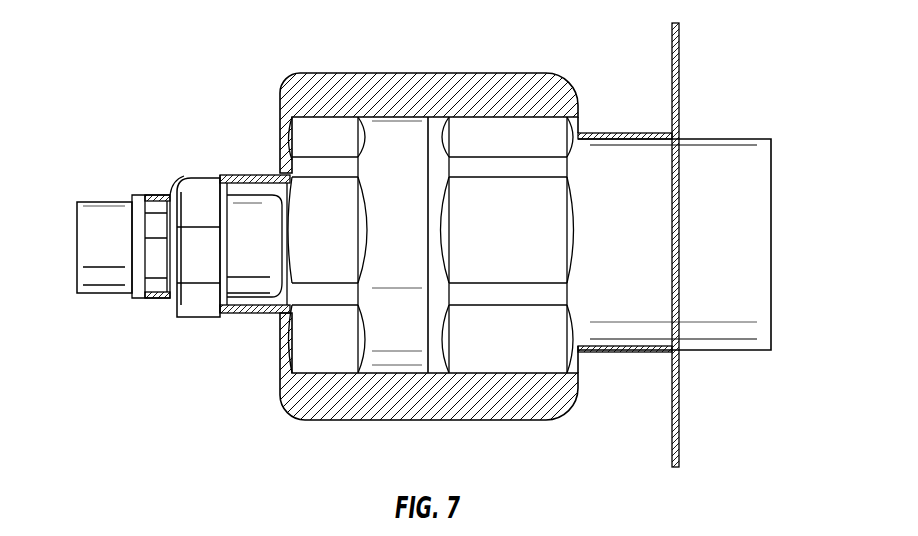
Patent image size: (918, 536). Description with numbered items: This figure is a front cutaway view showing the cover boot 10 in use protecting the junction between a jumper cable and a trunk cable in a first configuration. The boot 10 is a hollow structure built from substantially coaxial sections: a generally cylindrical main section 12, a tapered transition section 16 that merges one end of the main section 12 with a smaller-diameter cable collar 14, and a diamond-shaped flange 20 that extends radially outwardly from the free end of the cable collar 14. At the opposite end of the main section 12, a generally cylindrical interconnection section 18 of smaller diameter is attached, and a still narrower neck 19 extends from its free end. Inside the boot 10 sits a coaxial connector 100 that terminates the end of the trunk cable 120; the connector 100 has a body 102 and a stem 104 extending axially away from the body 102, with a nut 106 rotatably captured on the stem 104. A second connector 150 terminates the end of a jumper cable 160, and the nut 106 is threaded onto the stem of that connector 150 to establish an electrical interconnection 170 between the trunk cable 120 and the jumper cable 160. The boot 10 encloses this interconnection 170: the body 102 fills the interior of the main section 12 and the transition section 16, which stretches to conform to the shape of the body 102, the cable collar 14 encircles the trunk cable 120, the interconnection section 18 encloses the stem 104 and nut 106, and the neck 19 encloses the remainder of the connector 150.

The cover boot 10 is at (499, 428).
The main section 12 is at (330, 125).
The cable collar 14 is at (632, 352).
The transition section 16 is at (526, 118).
The interconnection section 18 is at (240, 176).
The neck 19 is at (148, 194).
The flange 20 is at (680, 418).
The coaxial connector 100 is at (550, 270).
The body 102 is at (398, 303).
The stem 104 is at (245, 265).
The nut 106 is at (187, 268).
The trunk cable 120 is at (773, 183).
The connector 150 is at (150, 265).
The jumper cable 160 is at (90, 280).
The electrical interconnection 170 is at (180, 164).